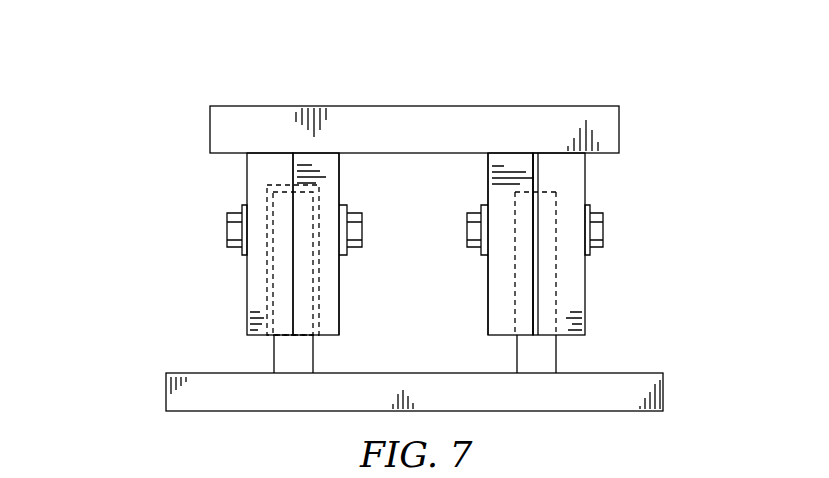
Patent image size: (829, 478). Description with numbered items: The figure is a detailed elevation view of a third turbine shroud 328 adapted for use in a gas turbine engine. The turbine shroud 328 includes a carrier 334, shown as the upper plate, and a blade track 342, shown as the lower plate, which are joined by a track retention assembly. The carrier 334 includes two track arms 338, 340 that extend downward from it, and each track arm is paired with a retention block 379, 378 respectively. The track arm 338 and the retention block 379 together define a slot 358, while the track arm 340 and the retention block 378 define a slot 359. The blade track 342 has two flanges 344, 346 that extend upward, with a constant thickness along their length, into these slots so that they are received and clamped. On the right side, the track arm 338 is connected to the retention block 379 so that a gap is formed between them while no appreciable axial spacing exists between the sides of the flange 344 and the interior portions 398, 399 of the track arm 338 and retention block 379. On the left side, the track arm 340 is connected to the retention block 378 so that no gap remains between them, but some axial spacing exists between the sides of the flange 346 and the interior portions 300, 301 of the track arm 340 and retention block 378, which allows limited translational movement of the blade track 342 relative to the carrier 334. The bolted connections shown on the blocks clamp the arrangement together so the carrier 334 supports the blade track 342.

The turbine shroud 328 is at (156, 102).
The carrier 334 is at (598, 134).
The blade track 342 is at (632, 400).
The interior portion of track arm 300 is at (265, 253).
The interior portion of retention block 301 is at (321, 261).
The retention block 378 is at (255, 301).
The retention block 379 is at (571, 289).
The slot 359 is at (291, 180).
The slot 358 is at (541, 205).
The track arm 340 is at (335, 179).
The track arm 338 is at (495, 180).
The interior portion of track arm 398 is at (531, 285).
The interior portion of retention block 399 is at (541, 222).
The flange 344 is at (536, 353).
The flange 346 is at (298, 353).